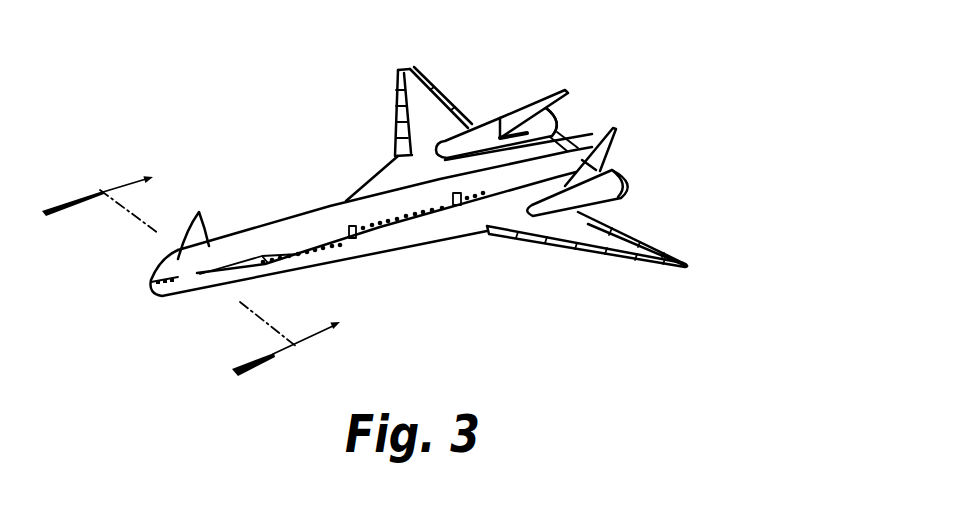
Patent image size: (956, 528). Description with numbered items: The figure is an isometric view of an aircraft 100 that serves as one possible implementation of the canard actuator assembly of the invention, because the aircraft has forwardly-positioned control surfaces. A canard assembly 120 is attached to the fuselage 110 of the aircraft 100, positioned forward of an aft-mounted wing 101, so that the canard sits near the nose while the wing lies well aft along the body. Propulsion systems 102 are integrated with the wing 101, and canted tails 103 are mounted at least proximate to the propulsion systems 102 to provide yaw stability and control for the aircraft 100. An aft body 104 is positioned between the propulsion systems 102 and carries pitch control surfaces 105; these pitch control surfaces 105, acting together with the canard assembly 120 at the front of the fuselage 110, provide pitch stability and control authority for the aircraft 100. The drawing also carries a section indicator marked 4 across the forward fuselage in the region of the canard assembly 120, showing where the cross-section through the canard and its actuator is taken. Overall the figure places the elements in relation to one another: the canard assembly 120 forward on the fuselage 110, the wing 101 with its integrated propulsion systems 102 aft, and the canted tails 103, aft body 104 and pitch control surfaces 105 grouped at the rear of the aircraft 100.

The aircraft 100 is at (443, 183).
The wing 101 is at (504, 237).
The propulsion systems 102 is at (496, 104).
The canted tails 103 is at (550, 88).
The aft body 104 is at (592, 115).
The pitch control surfaces 105 is at (586, 158).
The fuselage 110 is at (278, 224).
The canard assembly 120 is at (220, 203).
The section line 4- 4 is at (202, 267).